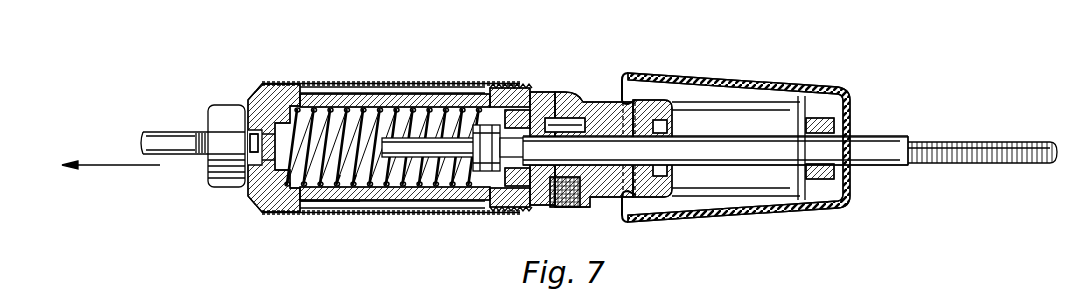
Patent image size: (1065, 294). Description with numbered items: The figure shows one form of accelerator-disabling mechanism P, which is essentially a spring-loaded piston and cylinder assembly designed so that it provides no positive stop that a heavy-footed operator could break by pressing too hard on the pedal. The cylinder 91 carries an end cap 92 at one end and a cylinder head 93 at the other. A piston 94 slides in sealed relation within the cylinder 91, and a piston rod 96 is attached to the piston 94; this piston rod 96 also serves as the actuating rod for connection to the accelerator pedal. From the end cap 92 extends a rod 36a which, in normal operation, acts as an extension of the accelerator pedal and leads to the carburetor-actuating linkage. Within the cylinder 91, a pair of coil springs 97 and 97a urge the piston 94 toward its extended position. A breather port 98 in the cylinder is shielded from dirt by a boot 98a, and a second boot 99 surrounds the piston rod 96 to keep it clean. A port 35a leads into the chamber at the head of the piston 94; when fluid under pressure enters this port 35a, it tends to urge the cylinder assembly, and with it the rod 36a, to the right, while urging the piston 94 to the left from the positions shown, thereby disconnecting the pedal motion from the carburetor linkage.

The rod 36a is at (168, 135).
The end cap 92 is at (266, 95).
The coil spring 97 is at (333, 110).
The coil spring 97a is at (366, 178).
The cylinder 91 is at (400, 100).
The boot 98a is at (455, 82).
The breather port 98 is at (334, 200).
The piston 94 is at (496, 211).
The cylinder head 93 is at (540, 94).
The accelerator-disabling mechanism P is at (583, 84).
The port 35a is at (592, 200).
The piston rod 96 is at (613, 187).
The boot 99 is at (700, 81).